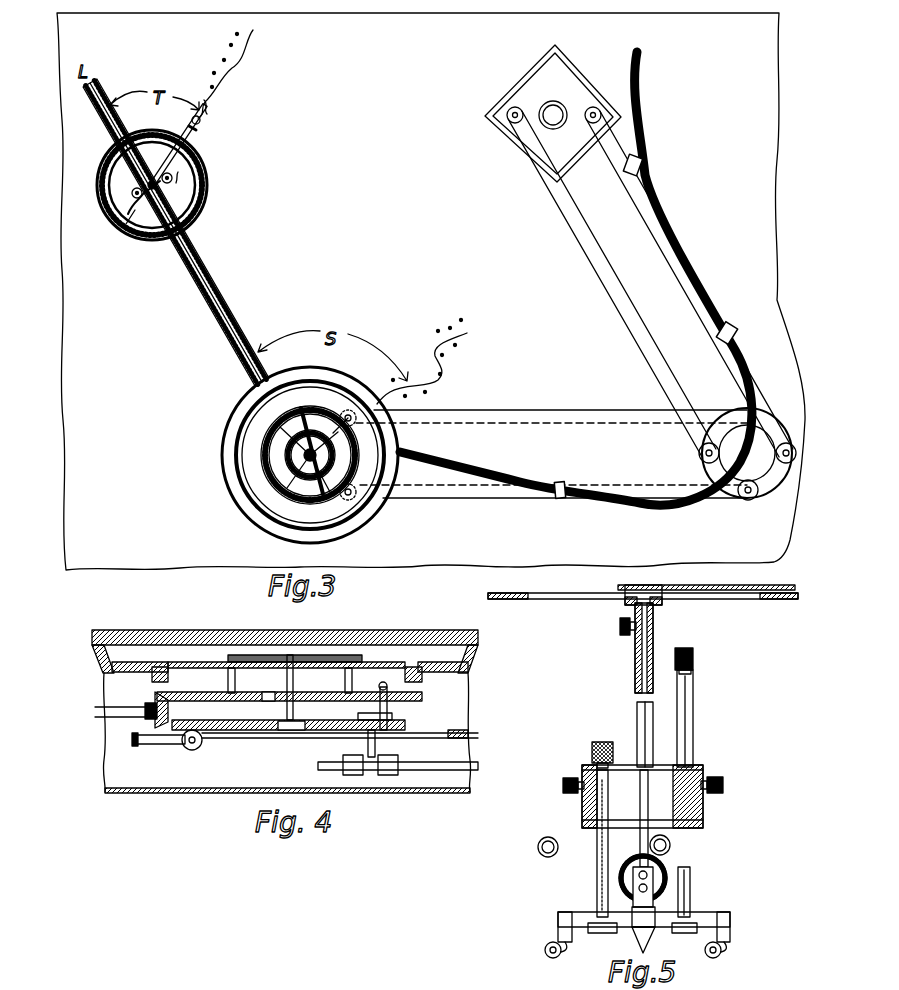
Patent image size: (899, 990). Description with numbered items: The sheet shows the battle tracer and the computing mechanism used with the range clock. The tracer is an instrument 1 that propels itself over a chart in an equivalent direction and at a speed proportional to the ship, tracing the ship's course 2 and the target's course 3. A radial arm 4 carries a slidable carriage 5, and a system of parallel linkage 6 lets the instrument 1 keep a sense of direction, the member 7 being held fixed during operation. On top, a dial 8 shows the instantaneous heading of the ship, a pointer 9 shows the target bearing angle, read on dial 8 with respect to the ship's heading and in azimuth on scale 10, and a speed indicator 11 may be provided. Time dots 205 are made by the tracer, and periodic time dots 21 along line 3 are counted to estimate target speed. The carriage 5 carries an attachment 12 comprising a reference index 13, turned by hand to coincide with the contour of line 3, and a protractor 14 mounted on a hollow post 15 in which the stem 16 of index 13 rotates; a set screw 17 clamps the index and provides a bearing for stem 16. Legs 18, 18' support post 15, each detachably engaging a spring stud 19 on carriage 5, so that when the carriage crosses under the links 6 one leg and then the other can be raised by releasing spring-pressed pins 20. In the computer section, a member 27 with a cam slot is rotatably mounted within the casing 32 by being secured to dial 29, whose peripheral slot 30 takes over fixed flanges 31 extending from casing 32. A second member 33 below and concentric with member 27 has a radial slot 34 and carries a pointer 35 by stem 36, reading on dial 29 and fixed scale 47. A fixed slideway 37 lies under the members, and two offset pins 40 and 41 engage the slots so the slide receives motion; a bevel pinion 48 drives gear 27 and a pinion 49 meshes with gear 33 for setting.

In FIG. 3, the instrument 1 is at (378, 501).
In FIG. 3, the ship's course 2 is at (422, 368).
In FIG. 3, the target's course 3 is at (238, 64).
In FIG. 3, the radial arm 4 is at (218, 292).
In FIG. 5, the radial arm 4 is at (640, 860).
In FIG. 3, the slidable carriage 5 is at (112, 240).
In FIG. 5, the slidable carriage 5 is at (700, 912).
In FIG. 3, the parallel linkage 6 is at (668, 256).
In FIG. 5, the parallel linkage 6 is at (541, 843).
In FIG. 3, the member 7 is at (553, 113).
In FIG. 3, the dial 8 is at (272, 450).
In FIG. 3, the pointer 9 is at (304, 428).
In FIG. 3, the scale 10 is at (316, 493).
In FIG. 3, the speed indicator 11 is at (543, 455).
In FIG. 3, the attachment 12 is at (140, 186).
In FIG. 5, the attachment 12 is at (705, 823).
In FIG. 3, the reference index 13 is at (197, 125).
In FIG. 5, the reference index 13 is at (748, 584).
In FIG. 3, the scale or protractor 14 is at (208, 198).
In FIG. 5, the scale or protractor 14 is at (786, 600).
In FIG. 5, the hollow post 15 is at (637, 713).
In FIG. 5, the stem 16 is at (652, 626).
In FIG. 5, the set screw 17 is at (618, 627).
In FIG. 5, the leg 18 is at (587, 843).
In FIG. 5, the leg 18' is at (699, 707).
In FIG. 5, the spring stud 19 is at (597, 886).
In FIG. 5, the spring-pressed pin 20 is at (723, 783).
In FIG. 3, the periodic time dots 21 is at (208, 103).
In FIG. 4, the member 27 is at (410, 706).
In FIG. 4, the dial 29 is at (173, 667).
In FIG. 4, the peripheral slot 30 is at (428, 673).
In FIG. 4, the fixed flanges 31 is at (150, 673).
In FIG. 4, the casing 32 is at (438, 791).
In FIG. 4, the second member 33 is at (310, 731).
In FIG. 4, the radial slot 34 is at (285, 731).
In FIG. 4, the pointer 35 is at (238, 655).
In FIG. 4, the stem 36 is at (295, 709).
In FIG. 4, the slideway 37 is at (420, 766).
In FIG. 4, the pin 40 is at (368, 747).
In FIG. 4, the pin 41 is at (388, 713).
In FIG. 4, the fixed scale 47 is at (430, 667).
In FIG. 4, the bevel pinion 48 is at (170, 712).
In FIG. 4, the pinion 49 is at (192, 752).
In FIG. 3, the time dots 205 is at (432, 346).